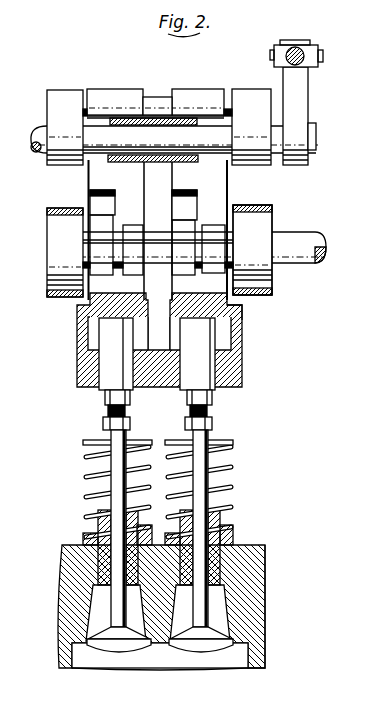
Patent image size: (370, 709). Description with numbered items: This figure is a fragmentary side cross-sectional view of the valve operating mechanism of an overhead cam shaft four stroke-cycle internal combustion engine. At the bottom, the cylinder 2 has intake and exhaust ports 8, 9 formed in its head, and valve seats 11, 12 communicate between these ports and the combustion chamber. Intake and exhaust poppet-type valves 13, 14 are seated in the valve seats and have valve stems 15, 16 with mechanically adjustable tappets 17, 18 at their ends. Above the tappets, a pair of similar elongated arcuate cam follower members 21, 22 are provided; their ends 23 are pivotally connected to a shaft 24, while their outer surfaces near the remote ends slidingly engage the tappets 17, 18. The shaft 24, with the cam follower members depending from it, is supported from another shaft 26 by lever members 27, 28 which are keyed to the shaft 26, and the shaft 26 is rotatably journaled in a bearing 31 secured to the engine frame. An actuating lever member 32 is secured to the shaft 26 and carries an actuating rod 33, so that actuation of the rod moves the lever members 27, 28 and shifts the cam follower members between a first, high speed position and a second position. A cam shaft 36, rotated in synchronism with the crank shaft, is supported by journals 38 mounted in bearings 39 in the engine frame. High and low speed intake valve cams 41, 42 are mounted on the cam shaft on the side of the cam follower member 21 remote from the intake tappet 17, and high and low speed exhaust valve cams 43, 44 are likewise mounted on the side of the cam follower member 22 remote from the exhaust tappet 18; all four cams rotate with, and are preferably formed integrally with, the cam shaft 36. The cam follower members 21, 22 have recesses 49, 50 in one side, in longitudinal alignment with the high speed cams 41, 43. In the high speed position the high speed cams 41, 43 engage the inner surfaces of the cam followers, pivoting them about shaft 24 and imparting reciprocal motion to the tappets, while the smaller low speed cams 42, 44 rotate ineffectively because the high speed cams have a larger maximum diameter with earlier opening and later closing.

The cylinder 2 is at (248, 657).
The intake port 8 is at (98, 601).
The exhaust port 9 is at (226, 604).
The valve seat 11 is at (70, 633).
The valve seat 12 is at (235, 632).
The intake valve 13 is at (126, 643).
The exhaust valve 14 is at (200, 650).
The valve stem 15 is at (116, 490).
The valve stem 16 is at (220, 483).
The tappet 17 is at (106, 372).
The tappet 18 is at (206, 364).
The cam follower member 21 is at (80, 312).
The cam follower member 22 is at (222, 305).
The ends 23 is at (111, 89).
The shaft 24 is at (158, 97).
The shaft 26 is at (317, 136).
The lever member 27 is at (60, 90).
The lever member 28 is at (247, 89).
The bearing 31 is at (163, 163).
The actuating lever member 32 is at (309, 100).
The actuating rod 33 is at (320, 50).
The cam shaft 36 is at (298, 233).
The journals 38 is at (60, 222).
The bearings 39 is at (248, 207).
The high speed intake valve cam 41 is at (109, 215).
The low speed intake valve cam 42 is at (132, 228).
The high speed exhaust valve cam 43 is at (188, 222).
The low speed exhaust valve cam 44 is at (213, 228).
The recess 49 is at (90, 200).
The recess 50 is at (172, 214).